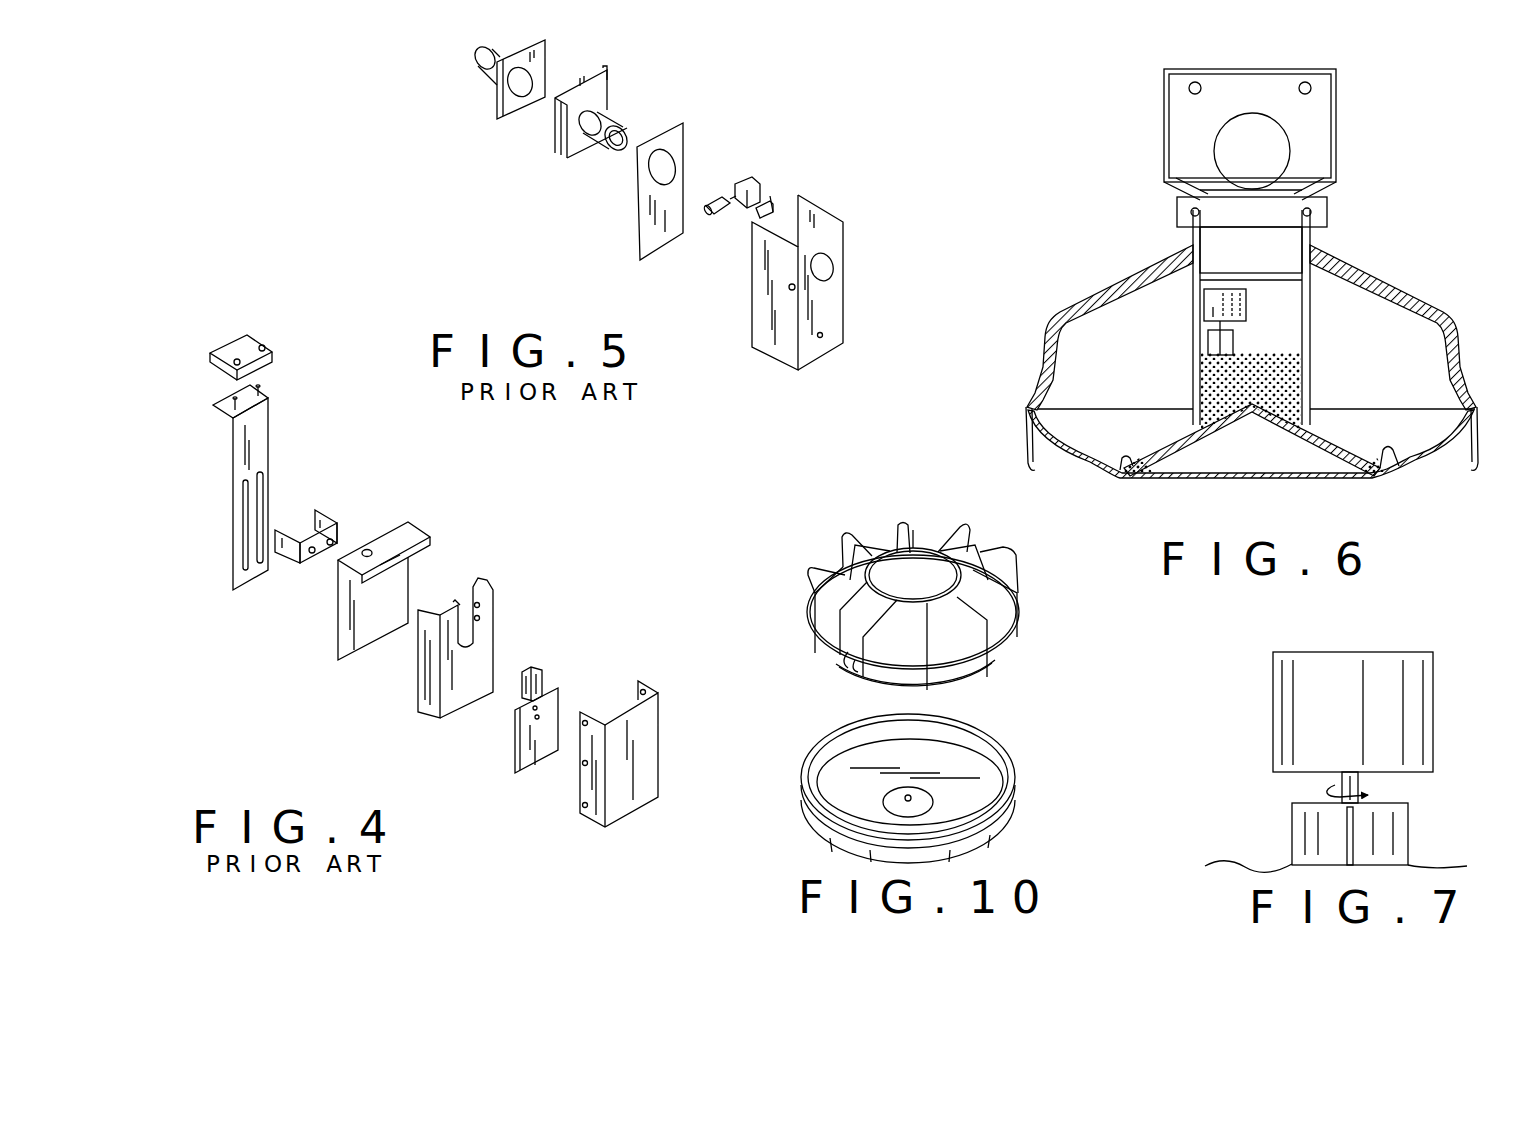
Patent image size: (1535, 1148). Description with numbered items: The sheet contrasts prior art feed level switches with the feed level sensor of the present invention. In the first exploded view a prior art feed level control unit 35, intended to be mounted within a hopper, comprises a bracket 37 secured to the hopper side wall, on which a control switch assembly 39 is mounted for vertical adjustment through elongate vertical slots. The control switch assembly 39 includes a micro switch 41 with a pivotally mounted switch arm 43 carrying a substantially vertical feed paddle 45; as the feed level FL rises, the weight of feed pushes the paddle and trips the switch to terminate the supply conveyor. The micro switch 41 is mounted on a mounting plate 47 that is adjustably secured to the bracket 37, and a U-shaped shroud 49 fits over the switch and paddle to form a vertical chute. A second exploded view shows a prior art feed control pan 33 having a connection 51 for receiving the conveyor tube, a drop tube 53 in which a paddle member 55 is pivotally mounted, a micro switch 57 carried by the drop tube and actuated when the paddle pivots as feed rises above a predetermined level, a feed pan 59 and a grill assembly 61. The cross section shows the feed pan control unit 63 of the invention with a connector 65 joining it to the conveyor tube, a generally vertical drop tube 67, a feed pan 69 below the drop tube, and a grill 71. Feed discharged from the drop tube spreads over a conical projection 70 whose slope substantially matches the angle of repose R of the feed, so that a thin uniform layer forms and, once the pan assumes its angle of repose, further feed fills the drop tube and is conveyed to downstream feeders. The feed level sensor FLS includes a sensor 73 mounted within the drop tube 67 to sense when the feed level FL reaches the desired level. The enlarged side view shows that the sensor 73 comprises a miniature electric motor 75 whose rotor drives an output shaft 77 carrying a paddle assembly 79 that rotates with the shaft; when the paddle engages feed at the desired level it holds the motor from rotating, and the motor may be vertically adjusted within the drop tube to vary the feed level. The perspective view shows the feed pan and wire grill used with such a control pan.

In FIG. 5, the feed control pan 33 is at (813, 383).
In FIG. 10, the feed control pan 33 is at (1027, 538).
In FIG. 4, the feed level control unit 35 is at (603, 850).
In FIG. 4, the bracket 37 is at (260, 420).
In FIG. 4, the control switch assembly 39 is at (617, 833).
In FIG. 4, the micro switch 41 is at (527, 668).
In FIG. 4, the switch arm 43 is at (540, 682).
In FIG. 4, the feed paddle 45 is at (550, 713).
In FIG. 4, the mounting plate 47 is at (487, 628).
In FIG. 4, the U-shaped shroud 49 is at (640, 738).
In FIG. 5, the connection 51 is at (570, 165).
In FIG. 5, the drop tube 53 is at (828, 286).
In FIG. 5, the paddle member 55 is at (637, 229).
In FIG. 5, the micro switch 57 is at (722, 218).
In FIG. 10, the feed pan 59 is at (990, 823).
In FIG. 10, the grill assembly 61 is at (998, 663).
In FIG. 6, the feed pan control unit 63 is at (1370, 245).
In FIG. 6, the connector 65 is at (1311, 123).
In FIG. 6, the drop tube 67 is at (1313, 296).
In FIG. 6, the feed pan 69 is at (1398, 455).
In FIG. 6, the conical projection 70 is at (1313, 440).
In FIG. 6, the grill 71 is at (1464, 328).
In FIG. 6, the sensor 73 is at (1197, 296).
In FIG. 7, the sensor 73 is at (1447, 673).
In FIG. 6, the miniature electric motor 75 is at (1212, 312).
In FIG. 7, the miniature electric motor 75 is at (1390, 716).
In FIG. 6, the output shaft 77 is at (1207, 326).
In FIG. 7, the output shaft 77 is at (1358, 783).
In FIG. 6, the paddle assembly 79 is at (1207, 347).
In FIG. 7, the paddle assembly 79 is at (1386, 832).
In FIG. 6, the feed level FL is at (1286, 352).
In FIG. 7, the feed level FL is at (1250, 862).
In FIG. 6, the feed level sensor FLS is at (1194, 270).
In FIG. 6, the angle of repose R is at (1353, 428).